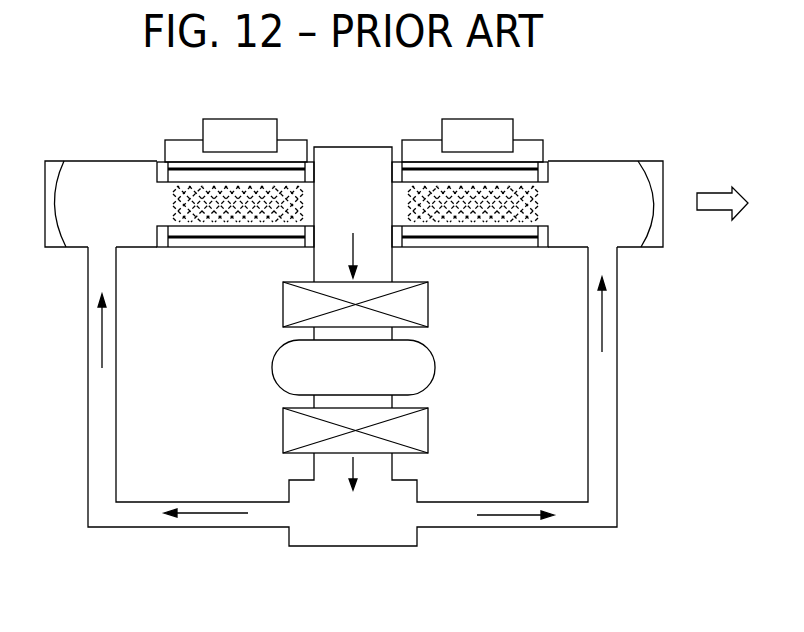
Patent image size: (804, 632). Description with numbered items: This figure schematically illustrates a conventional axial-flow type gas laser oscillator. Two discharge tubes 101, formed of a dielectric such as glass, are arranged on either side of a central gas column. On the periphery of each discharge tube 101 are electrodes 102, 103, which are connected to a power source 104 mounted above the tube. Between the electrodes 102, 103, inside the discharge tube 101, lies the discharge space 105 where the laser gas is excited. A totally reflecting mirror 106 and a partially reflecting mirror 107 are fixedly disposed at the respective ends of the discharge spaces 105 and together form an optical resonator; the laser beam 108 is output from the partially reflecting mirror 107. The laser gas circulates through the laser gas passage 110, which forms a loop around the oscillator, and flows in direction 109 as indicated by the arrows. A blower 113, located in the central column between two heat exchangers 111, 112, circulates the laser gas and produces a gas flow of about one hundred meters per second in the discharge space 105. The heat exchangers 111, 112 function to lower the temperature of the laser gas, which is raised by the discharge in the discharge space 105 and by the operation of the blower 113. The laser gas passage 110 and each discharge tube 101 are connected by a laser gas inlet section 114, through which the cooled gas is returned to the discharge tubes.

The discharge tube 101 is at (233, 230).
The electrode 102 is at (163, 243).
The electrode 103 is at (307, 243).
The power source 104 is at (243, 119).
The discharge space 105 is at (237, 198).
The totally reflecting mirror 106 is at (56, 248).
The partially reflecting mirror 107 is at (650, 158).
The laser beam 108 is at (718, 223).
The direction 109 is at (100, 345).
The laser gas passage 110 is at (117, 400).
The heat exchanger 111 is at (427, 313).
The heat exchanger 112 is at (428, 438).
The blower 113 is at (433, 377).
The laser gas inlet section 114 is at (102, 238).